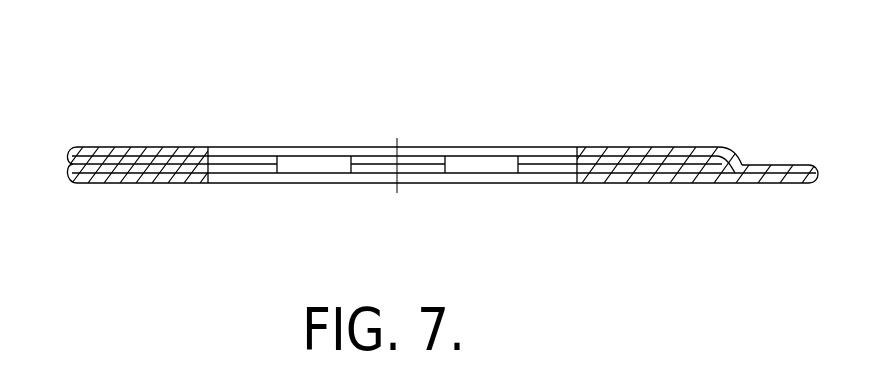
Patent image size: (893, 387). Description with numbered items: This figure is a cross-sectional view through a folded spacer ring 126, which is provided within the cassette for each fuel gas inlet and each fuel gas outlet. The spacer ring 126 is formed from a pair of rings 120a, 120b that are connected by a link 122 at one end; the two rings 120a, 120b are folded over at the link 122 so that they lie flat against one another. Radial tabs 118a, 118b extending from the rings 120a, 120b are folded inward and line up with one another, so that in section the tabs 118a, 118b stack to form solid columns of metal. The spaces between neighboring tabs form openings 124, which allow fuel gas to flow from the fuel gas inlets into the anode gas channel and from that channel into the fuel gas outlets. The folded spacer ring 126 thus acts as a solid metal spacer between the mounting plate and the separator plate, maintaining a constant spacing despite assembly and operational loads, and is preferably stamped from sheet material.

The ring 120a is at (116, 150).
The ring 120b is at (100, 184).
The radial tab 118a is at (173, 157).
The radial tab 118b is at (208, 184).
The opening 124 is at (320, 163).
The link 122 is at (790, 165).
The spacer ring 126 is at (682, 132).